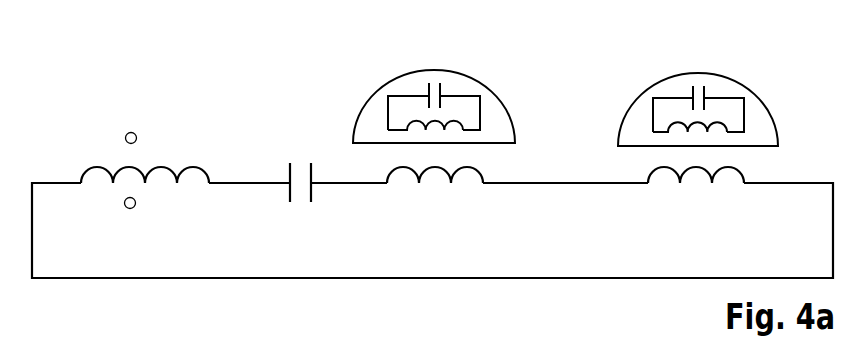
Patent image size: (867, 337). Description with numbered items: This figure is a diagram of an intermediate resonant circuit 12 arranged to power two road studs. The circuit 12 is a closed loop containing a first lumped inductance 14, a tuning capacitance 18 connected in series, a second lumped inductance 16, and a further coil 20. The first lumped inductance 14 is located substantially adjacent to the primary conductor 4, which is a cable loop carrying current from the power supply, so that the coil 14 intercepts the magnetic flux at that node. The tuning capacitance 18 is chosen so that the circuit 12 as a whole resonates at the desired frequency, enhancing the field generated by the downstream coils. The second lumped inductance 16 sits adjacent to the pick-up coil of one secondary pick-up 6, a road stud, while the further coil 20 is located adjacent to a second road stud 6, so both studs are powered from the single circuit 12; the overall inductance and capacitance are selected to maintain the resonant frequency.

The intermediate resonant circuit 12 is at (226, 84).
The primary conductor 4 is at (135, 134).
The first lumped inductance 14 is at (168, 167).
The tuning capacitance 18 is at (311, 192).
The second lumped inductance 16 is at (427, 170).
The further coil 20 is at (683, 175).
The secondary pick-up 6 is at (358, 117).